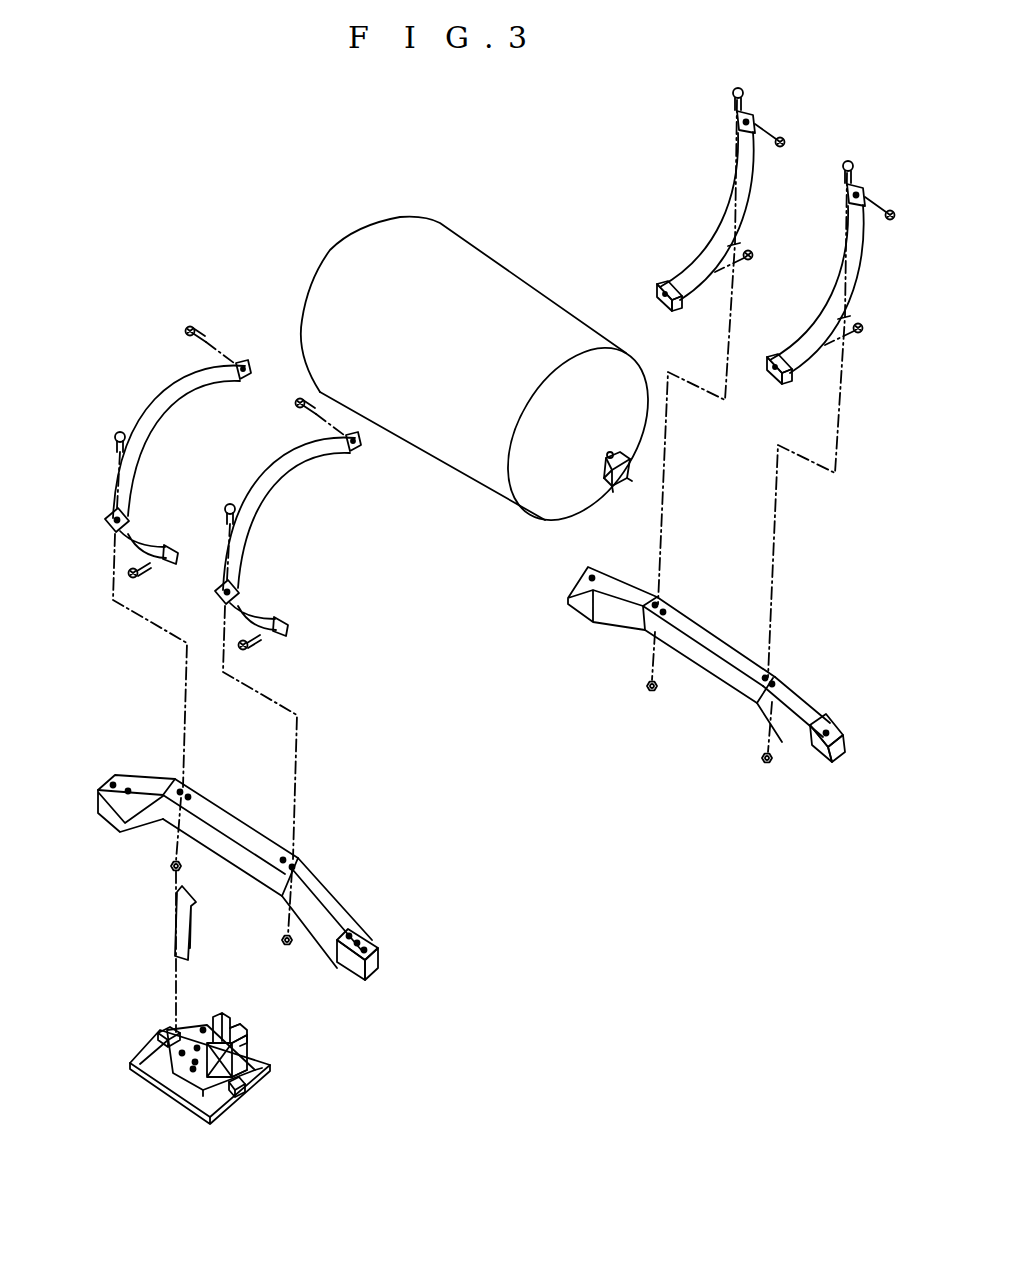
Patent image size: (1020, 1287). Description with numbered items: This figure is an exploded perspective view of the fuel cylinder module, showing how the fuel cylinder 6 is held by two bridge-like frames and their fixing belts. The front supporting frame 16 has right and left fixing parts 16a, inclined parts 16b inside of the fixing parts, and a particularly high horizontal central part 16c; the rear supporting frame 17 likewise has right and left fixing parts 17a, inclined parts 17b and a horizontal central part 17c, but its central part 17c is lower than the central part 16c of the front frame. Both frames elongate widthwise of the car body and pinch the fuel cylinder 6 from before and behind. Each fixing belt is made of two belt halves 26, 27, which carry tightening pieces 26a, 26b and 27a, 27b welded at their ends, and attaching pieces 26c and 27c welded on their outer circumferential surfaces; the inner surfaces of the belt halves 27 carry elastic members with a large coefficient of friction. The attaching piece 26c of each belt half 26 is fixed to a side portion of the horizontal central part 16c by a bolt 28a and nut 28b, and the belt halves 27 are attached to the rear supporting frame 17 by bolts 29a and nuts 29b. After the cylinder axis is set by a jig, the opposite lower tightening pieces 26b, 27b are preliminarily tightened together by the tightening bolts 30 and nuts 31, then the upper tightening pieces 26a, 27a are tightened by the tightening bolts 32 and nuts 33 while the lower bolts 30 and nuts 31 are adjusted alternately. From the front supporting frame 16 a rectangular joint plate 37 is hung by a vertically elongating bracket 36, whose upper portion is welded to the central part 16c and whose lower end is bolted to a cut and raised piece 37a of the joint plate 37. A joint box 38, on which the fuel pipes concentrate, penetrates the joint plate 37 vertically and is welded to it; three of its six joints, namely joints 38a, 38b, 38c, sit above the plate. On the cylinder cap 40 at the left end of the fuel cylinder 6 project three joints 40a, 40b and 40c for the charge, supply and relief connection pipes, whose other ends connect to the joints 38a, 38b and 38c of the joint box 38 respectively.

The fuel cylinder 6 is at (490, 258).
The front supporting frame 16 is at (255, 844).
The fixing part 16a is at (100, 786).
The inclined part 16b is at (168, 780).
The horizontal central part 16c is at (246, 836).
The rear supporting frame 17 is at (690, 666).
The fixing part 17a is at (578, 580).
The inclined part 17b is at (622, 582).
The horizontal central part 17c is at (712, 640).
The belt half 26 is at (237, 499).
The upper tightening piece 26a is at (248, 362).
The lower tightening piece 26b is at (178, 562).
The attaching piece 26c is at (108, 525).
The belt half 27 is at (757, 244).
The upper tightening piece 27a is at (749, 110).
The lower tightening piece 27b is at (661, 304).
The attaching piece 27c is at (742, 243).
The bolt 28a is at (116, 433).
The nut 28b is at (170, 869).
The bolt 29a is at (734, 100).
The nut 29b is at (646, 688).
The tightening bolt 30 is at (130, 580).
The nut 31 is at (743, 262).
The tightening bolt 32 is at (194, 326).
The nut 33 is at (786, 138).
The bracket 36 is at (172, 920).
The joint plate 37 is at (167, 1051).
The cut and raised piece 37a is at (158, 1031).
The joint box 38 is at (291, 1015).
The joint 38a is at (249, 1058).
The joint 38b is at (249, 1040).
The joint 38c is at (244, 1022).
The cylinder cap 40 is at (657, 456).
The joint 40a is at (610, 451).
The joint 40b is at (631, 481).
The joint 40c is at (613, 490).